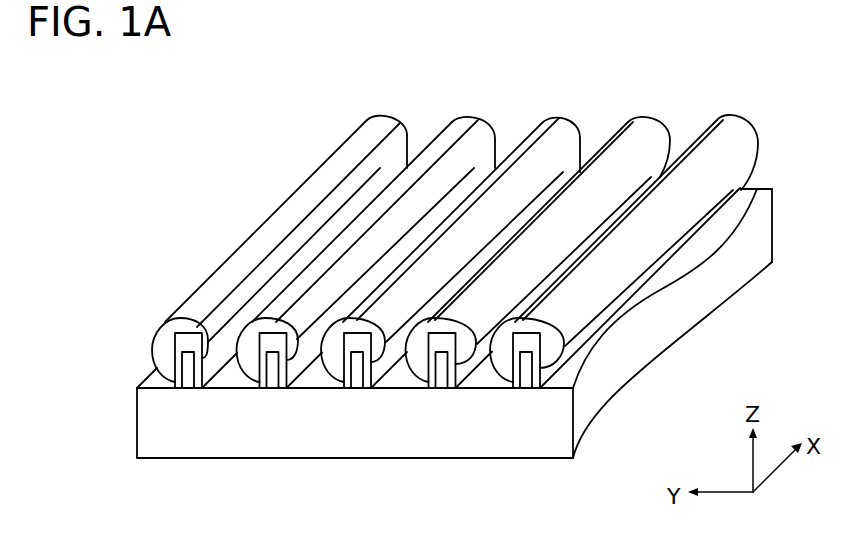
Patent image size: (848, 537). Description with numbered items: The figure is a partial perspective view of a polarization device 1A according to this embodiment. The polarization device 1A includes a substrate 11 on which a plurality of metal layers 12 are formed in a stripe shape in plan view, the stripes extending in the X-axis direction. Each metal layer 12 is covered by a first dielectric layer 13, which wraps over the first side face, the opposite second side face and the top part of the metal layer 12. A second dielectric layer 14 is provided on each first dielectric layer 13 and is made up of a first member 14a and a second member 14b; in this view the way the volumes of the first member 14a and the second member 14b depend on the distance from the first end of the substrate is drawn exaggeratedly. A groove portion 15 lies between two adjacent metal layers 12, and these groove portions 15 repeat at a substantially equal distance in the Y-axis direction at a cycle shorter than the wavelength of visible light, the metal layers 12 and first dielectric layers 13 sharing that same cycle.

The polarization device 1A is at (621, 84).
The substrate 11 is at (627, 372).
The metal layer 12 is at (360, 387).
The first dielectric layer 13 is at (369, 387).
The second dielectric layer 14 is at (455, 203).
The first member 14a is at (378, 128).
The second member 14b is at (402, 133).
The groove portion 15 is at (482, 378).